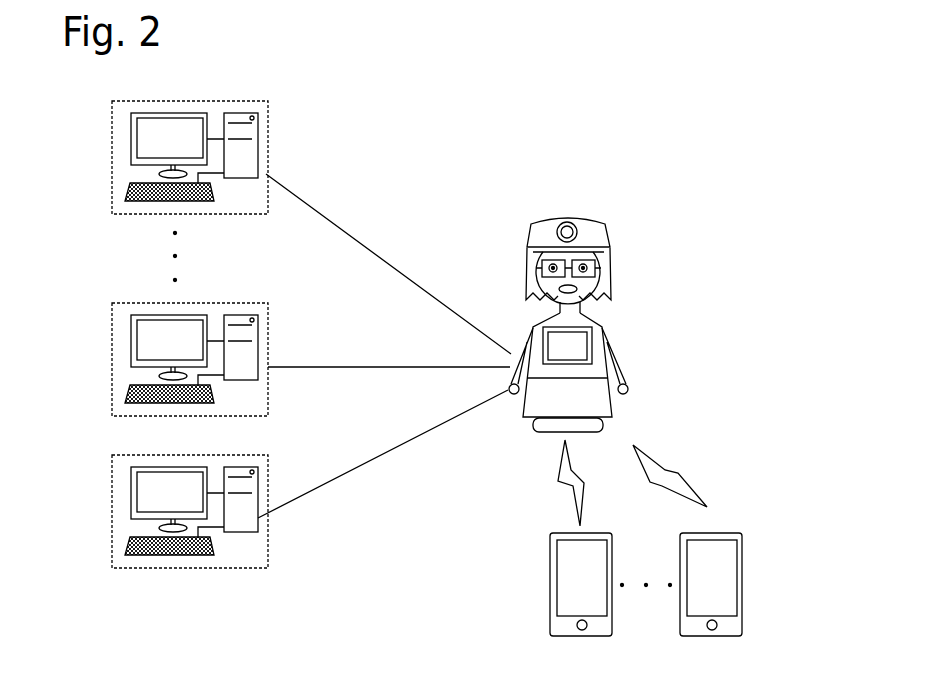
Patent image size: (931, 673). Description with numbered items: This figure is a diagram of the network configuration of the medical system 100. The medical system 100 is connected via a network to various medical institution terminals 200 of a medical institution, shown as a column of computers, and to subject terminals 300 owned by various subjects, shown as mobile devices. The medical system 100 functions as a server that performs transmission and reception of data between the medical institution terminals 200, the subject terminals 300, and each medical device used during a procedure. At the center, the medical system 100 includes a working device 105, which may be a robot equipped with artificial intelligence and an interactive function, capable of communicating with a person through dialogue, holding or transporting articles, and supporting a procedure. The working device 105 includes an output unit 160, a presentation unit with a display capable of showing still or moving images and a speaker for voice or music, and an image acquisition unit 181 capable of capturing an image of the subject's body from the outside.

The medical system 100 is at (612, 321).
The working device 105 is at (625, 373).
The output unit 160 is at (583, 351).
The image acquisition unit 181 is at (580, 231).
The medical institution terminals 200 is at (108, 110).
The subject terminals 300 is at (548, 577).